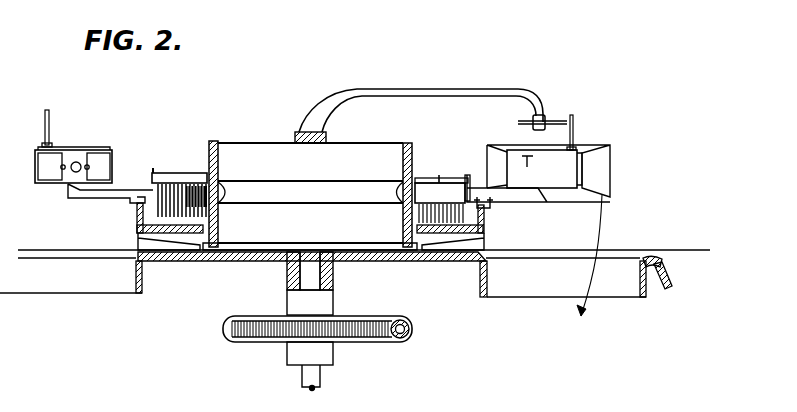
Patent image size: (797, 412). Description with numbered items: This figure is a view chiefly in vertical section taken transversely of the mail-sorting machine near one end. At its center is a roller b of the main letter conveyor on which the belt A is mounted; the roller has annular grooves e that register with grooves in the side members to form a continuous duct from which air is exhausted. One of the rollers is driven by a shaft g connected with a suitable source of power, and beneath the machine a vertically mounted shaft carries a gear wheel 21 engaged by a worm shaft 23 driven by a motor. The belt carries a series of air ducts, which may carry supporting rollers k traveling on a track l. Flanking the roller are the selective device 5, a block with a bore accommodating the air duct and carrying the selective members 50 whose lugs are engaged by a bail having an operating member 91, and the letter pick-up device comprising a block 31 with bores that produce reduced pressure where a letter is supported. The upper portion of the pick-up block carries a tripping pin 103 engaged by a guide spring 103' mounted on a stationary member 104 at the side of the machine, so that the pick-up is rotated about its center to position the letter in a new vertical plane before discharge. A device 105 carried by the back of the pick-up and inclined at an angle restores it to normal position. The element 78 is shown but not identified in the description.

The belt of the main letter conveyor A is at (217, 157).
The annular grooves e is at (224, 183).
The roller b is at (353, 150).
The selective members 50 is at (404, 207).
The stationary member 104 is at (467, 86).
The guide spring 103' is at (552, 112).
The tripping pin 103 is at (326, 130).
The restoring device 105 is at (558, 181).
The block of the letter pick-up device 31 is at (505, 152).
The selective device 5 is at (442, 199).
The operating member 91 is at (463, 176).
The supporting rollers k is at (490, 207).
The track l is at (486, 225).
The base plate 78 is at (488, 281).
The gear wheel 21 is at (240, 317).
The worm shaft 23 is at (403, 322).
The shaft g is at (314, 388).